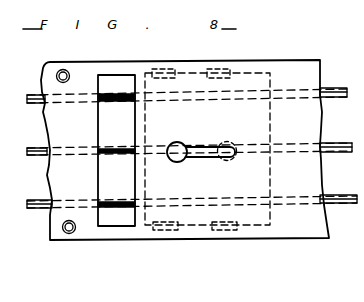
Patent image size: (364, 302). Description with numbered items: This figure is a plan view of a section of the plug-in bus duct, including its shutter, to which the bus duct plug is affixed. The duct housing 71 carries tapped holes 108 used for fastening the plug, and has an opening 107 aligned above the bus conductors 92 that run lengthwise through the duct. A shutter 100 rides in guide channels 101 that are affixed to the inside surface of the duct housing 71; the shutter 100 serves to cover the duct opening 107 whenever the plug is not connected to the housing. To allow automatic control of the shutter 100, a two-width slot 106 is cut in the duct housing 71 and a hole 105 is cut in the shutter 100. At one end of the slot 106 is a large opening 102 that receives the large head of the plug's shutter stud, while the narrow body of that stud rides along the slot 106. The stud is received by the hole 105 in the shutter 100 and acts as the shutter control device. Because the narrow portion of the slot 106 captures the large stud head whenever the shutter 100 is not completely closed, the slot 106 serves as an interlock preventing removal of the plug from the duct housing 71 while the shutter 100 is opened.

The duct housing 71 is at (310, 218).
The bus conductors 92 is at (127, 103).
The shutter 100 is at (200, 72).
The guide channels 101 is at (168, 71).
The large opening 102 is at (178, 142).
The hole 105 is at (227, 157).
The two-width slot 106 is at (207, 146).
The opening 107 is at (100, 113).
The tapped holes 108 is at (67, 72).